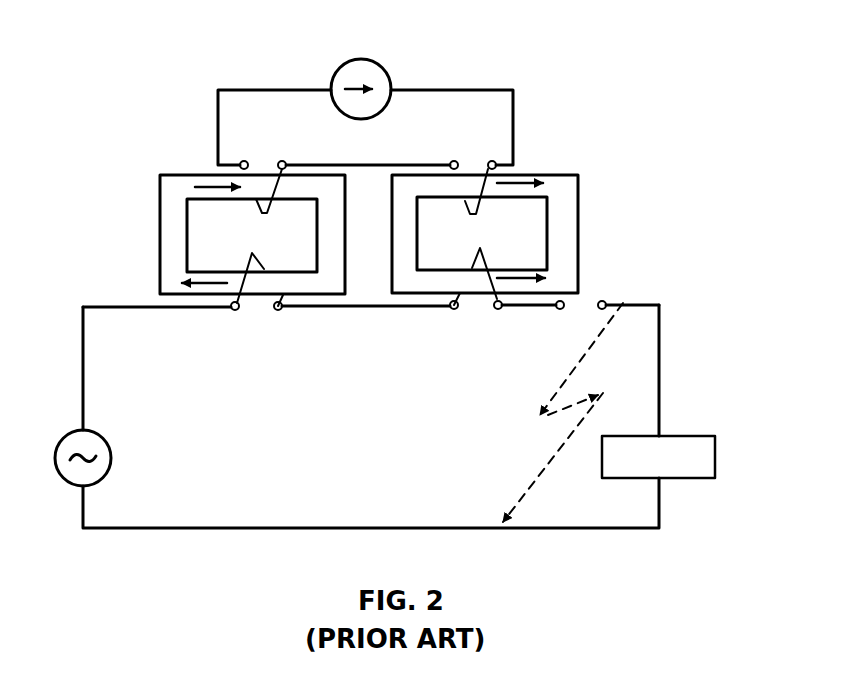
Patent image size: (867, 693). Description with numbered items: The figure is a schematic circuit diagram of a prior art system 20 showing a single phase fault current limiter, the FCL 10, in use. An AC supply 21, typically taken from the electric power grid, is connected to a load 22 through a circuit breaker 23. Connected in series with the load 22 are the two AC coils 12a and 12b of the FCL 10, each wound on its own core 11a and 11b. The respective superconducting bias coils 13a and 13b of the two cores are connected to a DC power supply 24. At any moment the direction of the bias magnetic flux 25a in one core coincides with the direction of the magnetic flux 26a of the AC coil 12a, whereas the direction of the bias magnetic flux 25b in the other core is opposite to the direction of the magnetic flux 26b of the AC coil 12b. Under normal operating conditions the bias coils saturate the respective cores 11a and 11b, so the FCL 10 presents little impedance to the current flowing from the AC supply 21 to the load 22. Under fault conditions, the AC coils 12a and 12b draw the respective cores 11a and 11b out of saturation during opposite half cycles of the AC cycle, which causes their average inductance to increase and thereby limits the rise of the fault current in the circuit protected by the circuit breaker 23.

The single phase FCL 10 is at (562, 110).
The core 11a is at (170, 226).
The core 11b is at (578, 200).
The AC coil 12a is at (266, 319).
The AC coil 12b is at (503, 318).
The superconducting bias coil 13a is at (263, 151).
The superconducting bias coil 13b is at (472, 150).
The system 20 is at (592, 600).
The AC supply 21 is at (112, 452).
The load 22 is at (715, 455).
The circuit breaker 23 is at (581, 411).
The DC power supply 24 is at (392, 68).
The bias magnetic flux 25a is at (208, 187).
The bias magnetic flux 25b is at (520, 182).
The magnetic flux of the AC coil 26a is at (190, 274).
The magnetic flux of the AC coil 26b is at (550, 280).